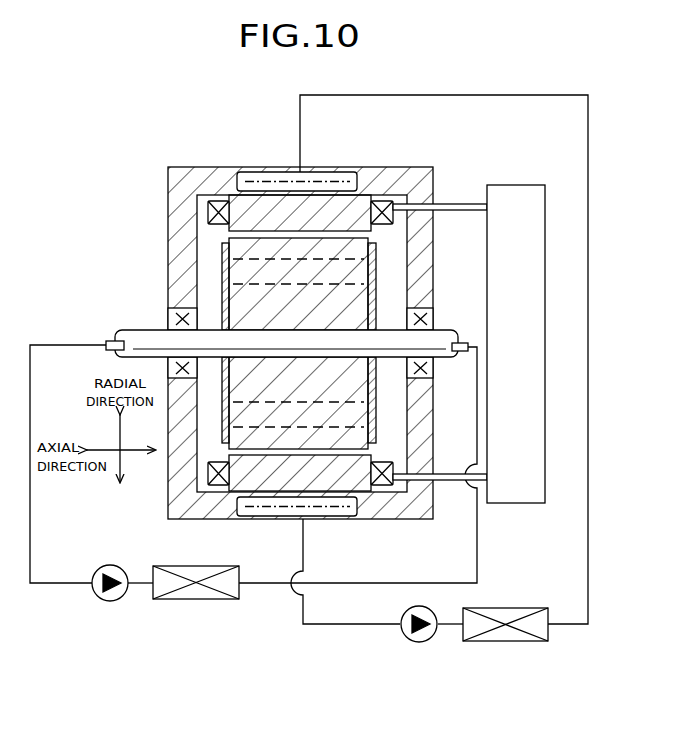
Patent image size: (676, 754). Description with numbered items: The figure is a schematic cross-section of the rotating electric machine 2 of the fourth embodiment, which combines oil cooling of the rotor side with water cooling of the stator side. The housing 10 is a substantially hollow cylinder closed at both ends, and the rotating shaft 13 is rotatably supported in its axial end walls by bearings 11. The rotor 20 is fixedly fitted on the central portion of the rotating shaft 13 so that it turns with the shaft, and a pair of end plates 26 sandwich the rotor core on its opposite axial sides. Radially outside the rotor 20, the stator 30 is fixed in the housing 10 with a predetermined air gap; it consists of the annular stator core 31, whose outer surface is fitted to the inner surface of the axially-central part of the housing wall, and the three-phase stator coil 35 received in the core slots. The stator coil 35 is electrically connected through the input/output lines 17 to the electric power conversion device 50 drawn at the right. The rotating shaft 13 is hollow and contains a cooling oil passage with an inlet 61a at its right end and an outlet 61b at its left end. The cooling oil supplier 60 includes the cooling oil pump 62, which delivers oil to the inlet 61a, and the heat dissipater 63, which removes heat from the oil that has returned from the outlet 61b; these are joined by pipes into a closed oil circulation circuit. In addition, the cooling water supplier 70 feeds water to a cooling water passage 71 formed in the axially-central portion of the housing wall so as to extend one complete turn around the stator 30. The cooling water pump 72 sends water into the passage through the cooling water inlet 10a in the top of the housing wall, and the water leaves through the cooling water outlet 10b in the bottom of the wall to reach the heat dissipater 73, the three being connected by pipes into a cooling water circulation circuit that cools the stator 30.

The rotating electric machine 2 is at (158, 126).
The housing 10 is at (167, 192).
The cooling water inlet 10a is at (300, 169).
The cooling water outlet 10b is at (303, 521).
The bearings 11 is at (180, 311).
The rotating shaft 13 is at (148, 337).
The input/output lines 17 is at (461, 203).
The rotor 20 is at (346, 236).
The end plates 26 is at (217, 256).
The stator 30 is at (260, 126).
The stator core 31 is at (256, 207).
The stator coil 35 is at (218, 201).
The electric power conversion device 50 is at (546, 222).
The cooling oil supplier 60 is at (51, 343).
The inlet 61a is at (462, 353).
The outlet 61b is at (109, 342).
The cooling oil pump 62 is at (110, 601).
The heat dissipater 63 is at (197, 599).
The cooling water supplier 70 is at (464, 92).
The cooling water passage 71 is at (277, 171).
The cooling water pump 72 is at (418, 642).
The heat dissipater 73 is at (498, 641).